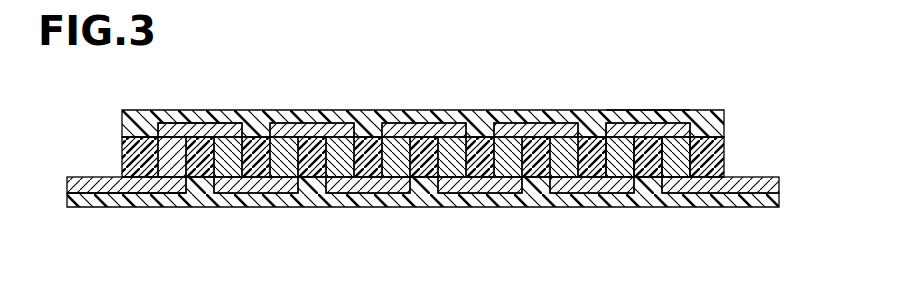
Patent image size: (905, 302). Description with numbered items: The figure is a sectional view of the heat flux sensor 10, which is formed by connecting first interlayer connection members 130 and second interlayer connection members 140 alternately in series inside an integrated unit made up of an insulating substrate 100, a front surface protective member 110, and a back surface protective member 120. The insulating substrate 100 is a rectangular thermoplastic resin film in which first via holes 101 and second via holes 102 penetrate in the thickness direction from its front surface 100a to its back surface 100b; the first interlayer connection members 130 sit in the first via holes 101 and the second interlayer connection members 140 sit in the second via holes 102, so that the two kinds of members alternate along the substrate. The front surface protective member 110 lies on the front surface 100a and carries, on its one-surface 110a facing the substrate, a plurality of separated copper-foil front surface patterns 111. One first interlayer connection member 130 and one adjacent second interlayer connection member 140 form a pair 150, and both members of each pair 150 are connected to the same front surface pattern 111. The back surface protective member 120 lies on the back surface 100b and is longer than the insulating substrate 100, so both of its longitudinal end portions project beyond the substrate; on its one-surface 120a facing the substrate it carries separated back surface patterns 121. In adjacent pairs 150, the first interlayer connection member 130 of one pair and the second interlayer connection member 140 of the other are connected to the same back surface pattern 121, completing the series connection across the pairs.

The heat flux sensor 10 is at (423, 163).
The insulating substrate 100 is at (449, 204).
The front surface 100a is at (160, 140).
The back surface 100b is at (158, 178).
The first via hole 101 is at (623, 172).
The second via hole 102 is at (686, 193).
The front surface protective member 110 is at (712, 124).
The one-surface of front surface protective member 110a is at (177, 124).
The front surface pattern 111 is at (654, 124).
The back surface protective member 120 is at (752, 207).
The one-surface of back surface protective member 120a is at (172, 194).
The back surface pattern 121 is at (576, 193).
The first interlayer connection member 130 is at (610, 193).
The second interlayer connection member 140 is at (678, 170).
The pair 150 is at (687, 90).